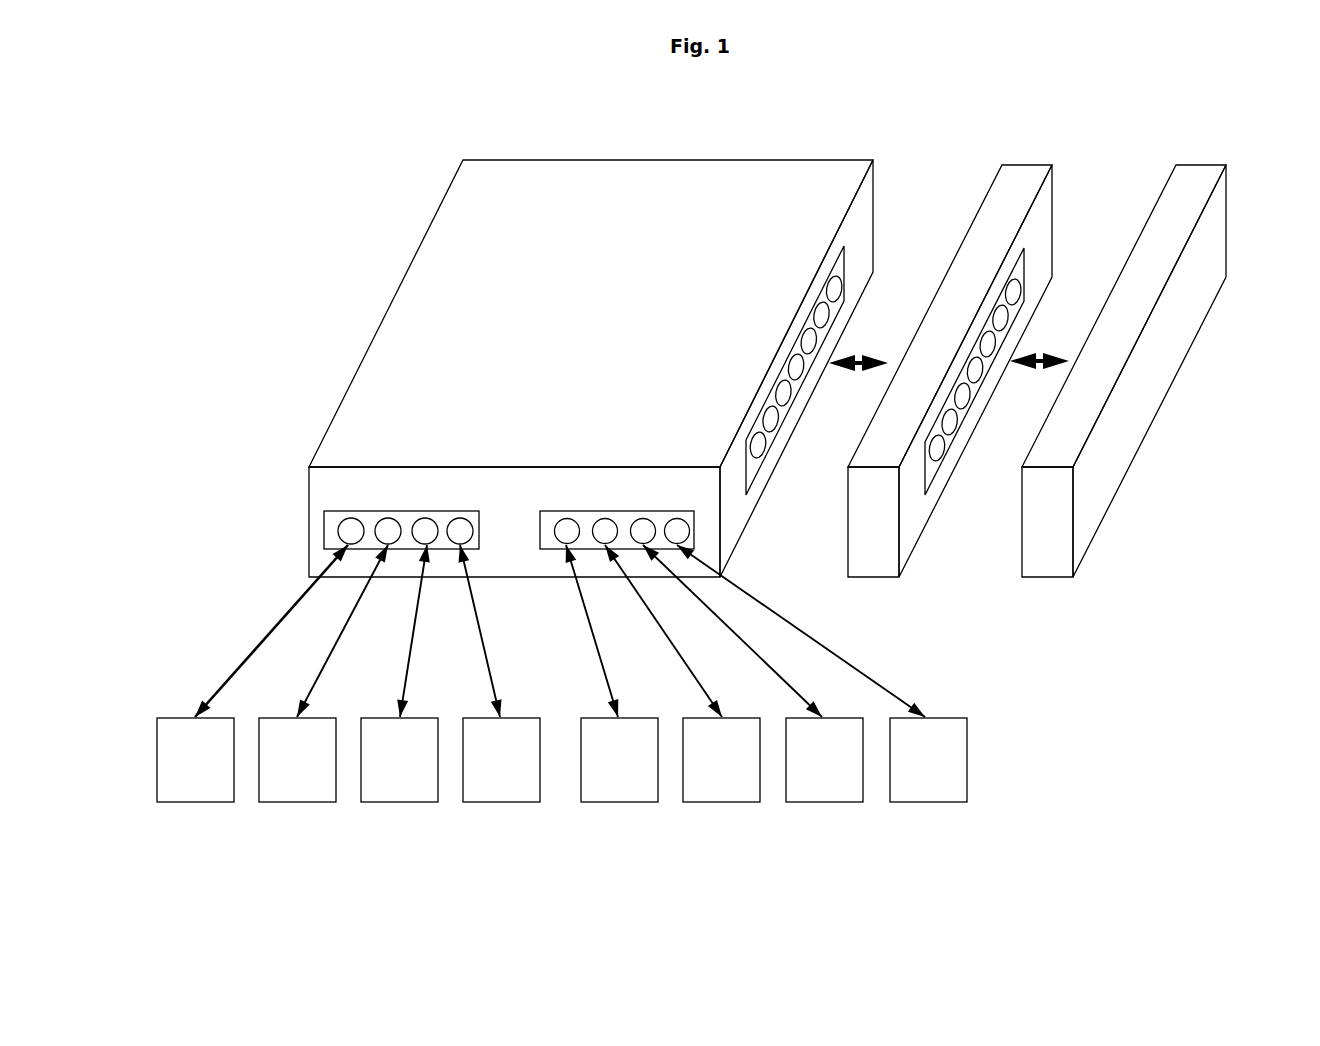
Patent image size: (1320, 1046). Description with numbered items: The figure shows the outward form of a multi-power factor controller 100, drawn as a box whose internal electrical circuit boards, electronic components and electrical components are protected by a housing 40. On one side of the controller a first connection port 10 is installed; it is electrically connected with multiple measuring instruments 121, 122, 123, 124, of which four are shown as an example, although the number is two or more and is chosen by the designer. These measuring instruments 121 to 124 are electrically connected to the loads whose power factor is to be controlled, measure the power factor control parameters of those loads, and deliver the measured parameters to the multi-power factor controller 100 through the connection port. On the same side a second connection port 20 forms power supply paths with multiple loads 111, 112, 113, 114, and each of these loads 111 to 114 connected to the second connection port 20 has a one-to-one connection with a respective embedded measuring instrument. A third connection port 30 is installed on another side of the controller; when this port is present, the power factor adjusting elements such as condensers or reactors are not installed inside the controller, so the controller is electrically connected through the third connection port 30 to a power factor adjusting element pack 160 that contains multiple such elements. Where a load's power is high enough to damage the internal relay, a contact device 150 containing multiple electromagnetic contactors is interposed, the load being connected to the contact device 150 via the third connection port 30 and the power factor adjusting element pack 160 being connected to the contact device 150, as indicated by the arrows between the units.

The multi-power factor controller 100 is at (708, 160).
The first connection port 10 is at (410, 510).
The second connection port 20 is at (624, 510).
The third connection port 30 is at (790, 345).
The housing 40 is at (373, 367).
The contact device 150 is at (1013, 165).
The power factor adjusting element pack 160 is at (1207, 165).
The first load 111 is at (604, 801).
The second load 112 is at (722, 803).
The third load 113 is at (824, 803).
The fourth load 114 is at (927, 803).
The first measuring instrument 121 is at (192, 803).
The second measuring instrument 122 is at (294, 803).
The third measuring instrument 123 is at (396, 803).
The fourth measuring instrument 124 is at (498, 803).